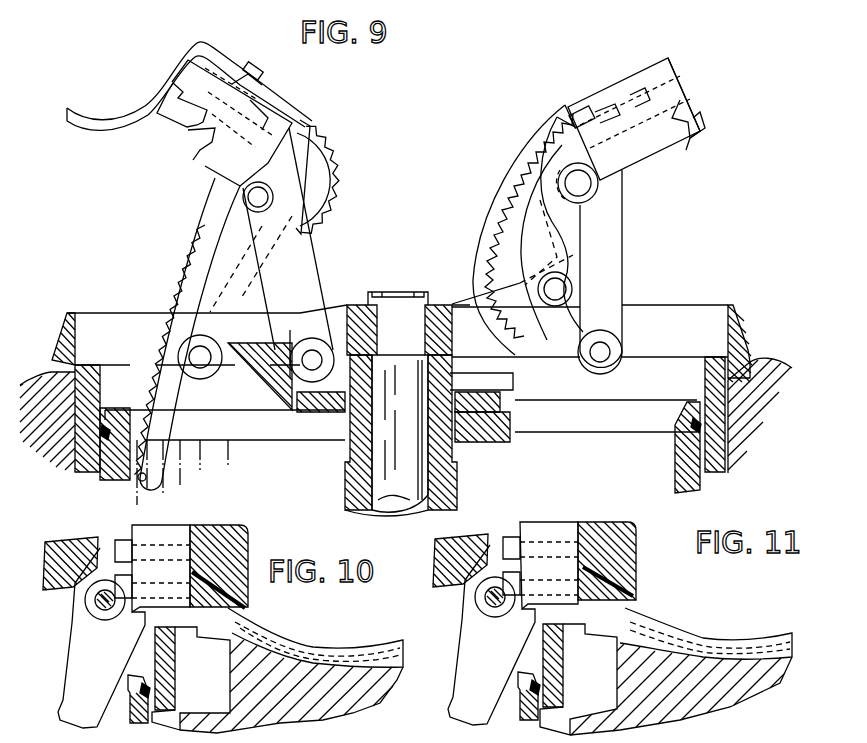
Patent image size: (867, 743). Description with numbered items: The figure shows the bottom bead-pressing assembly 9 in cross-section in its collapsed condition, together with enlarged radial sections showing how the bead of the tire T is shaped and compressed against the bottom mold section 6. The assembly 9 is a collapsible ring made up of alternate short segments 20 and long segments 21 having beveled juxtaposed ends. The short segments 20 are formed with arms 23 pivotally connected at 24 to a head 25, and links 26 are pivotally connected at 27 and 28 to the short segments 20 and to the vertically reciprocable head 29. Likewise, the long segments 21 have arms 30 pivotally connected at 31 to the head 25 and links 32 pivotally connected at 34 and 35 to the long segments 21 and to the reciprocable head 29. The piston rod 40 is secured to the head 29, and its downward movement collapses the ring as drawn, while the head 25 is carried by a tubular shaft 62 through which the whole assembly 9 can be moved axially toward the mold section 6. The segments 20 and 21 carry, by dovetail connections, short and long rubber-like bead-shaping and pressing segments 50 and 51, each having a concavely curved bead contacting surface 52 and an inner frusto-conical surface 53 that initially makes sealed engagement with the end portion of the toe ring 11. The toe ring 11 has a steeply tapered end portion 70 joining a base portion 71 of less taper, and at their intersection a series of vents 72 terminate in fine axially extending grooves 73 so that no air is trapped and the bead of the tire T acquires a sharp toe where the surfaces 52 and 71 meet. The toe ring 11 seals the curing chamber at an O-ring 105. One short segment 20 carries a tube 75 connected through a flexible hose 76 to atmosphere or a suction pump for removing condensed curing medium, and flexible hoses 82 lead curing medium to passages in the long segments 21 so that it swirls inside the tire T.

In FIG. 9, the bottom mold section 6 is at (761, 406).
In FIG. 10, the bottom mold section 6 is at (343, 707).
In FIG. 11, the bottom mold section 6 is at (703, 707).
In FIG. 9, the bottom bead-pressing assembly 9 is at (469, 277).
In FIG. 10, the bottom bead-pressing assembly 9 is at (189, 515).
In FIG. 11, the bottom bead-pressing assembly 9 is at (579, 515).
In FIG. 9, the toe ring 11 is at (740, 334).
In FIG. 10, the toe ring 11 is at (165, 678).
In FIG. 11, the toe ring 11 is at (553, 672).
In FIG. 9, the short arcuate segment 20 is at (205, 165).
In FIG. 9, the long arcuate segment 21 is at (630, 170).
In FIG. 10, the long arcuate segment 21 is at (210, 523).
In FIG. 11, the long arcuate segment 21 is at (600, 520).
In FIG. 9, the arm 23 is at (207, 245).
In FIG. 9, the pivot connection 24 is at (200, 365).
In FIG. 9, the head 25 is at (318, 442).
In FIG. 9, the link 26 is at (302, 263).
In FIG. 9, the pivot connection 27 is at (262, 195).
In FIG. 9, the pivot connection 28 is at (313, 348).
In FIG. 9, the vertically reciprocable head 29 is at (358, 308).
In FIG. 9, the arm 30 is at (612, 263).
In FIG. 10, the arm 30 is at (73, 660).
In FIG. 11, the arm 30 is at (463, 630).
In FIG. 9, the pivot connection 31 is at (602, 360).
In FIG. 9, the link 32 is at (525, 228).
In FIG. 10, the link 32 is at (73, 547).
In FIG. 11, the link 32 is at (462, 545).
In FIG. 9, the pivot connection 34 is at (578, 192).
In FIG. 10, the pivot connection 34 is at (102, 605).
In FIG. 11, the pivot connection 34 is at (492, 598).
In FIG. 9, the pivot connection 35 is at (548, 293).
In FIG. 9, the piston rod 40 is at (388, 455).
In FIG. 9, the short arcuate bead-shaping and pressing segment 50 is at (178, 112).
In FIG. 9, the long arcuate bead-shaping and pressing segment 51 is at (692, 118).
In FIG. 10, the long arcuate bead-shaping and pressing segment 51 is at (247, 597).
In FIG. 11, the long arcuate bead-shaping and pressing segment 51 is at (633, 572).
In FIG. 9, the concavely curved bead contacting surface 52 is at (150, 125).
In FIG. 10, the concavely curved bead contacting surface 52 is at (225, 647).
In FIG. 11, the concavely curved bead contacting surface 52 is at (633, 607).
In FIG. 9, the inner frusto-conical surface 53 is at (203, 140).
In FIG. 9, the tubular shaft 62 is at (458, 482).
In FIG. 9, the end portion 70 is at (733, 310).
In FIG. 9, the base portion 71 is at (745, 349).
In FIG. 10, the vent 72 is at (187, 647).
In FIG. 11, the vent 72 is at (574, 640).
In FIG. 10, the axially extending groove 73 is at (183, 591).
In FIG. 11, the axially extending groove 73 is at (577, 586).
In FIG. 9, the tube 75 is at (238, 67).
In FIG. 9, the flexible hose 76 is at (336, 175).
In FIG. 9, the flexible hose 82 is at (518, 160).
In FIG. 9, the O-ring 105 is at (694, 426).
In FIG. 10, the O-ring 105 is at (145, 688).
In FIG. 11, the O-ring 105 is at (535, 686).
In FIG. 10, the tire T is at (297, 648).
In FIG. 11, the tire T is at (720, 648).